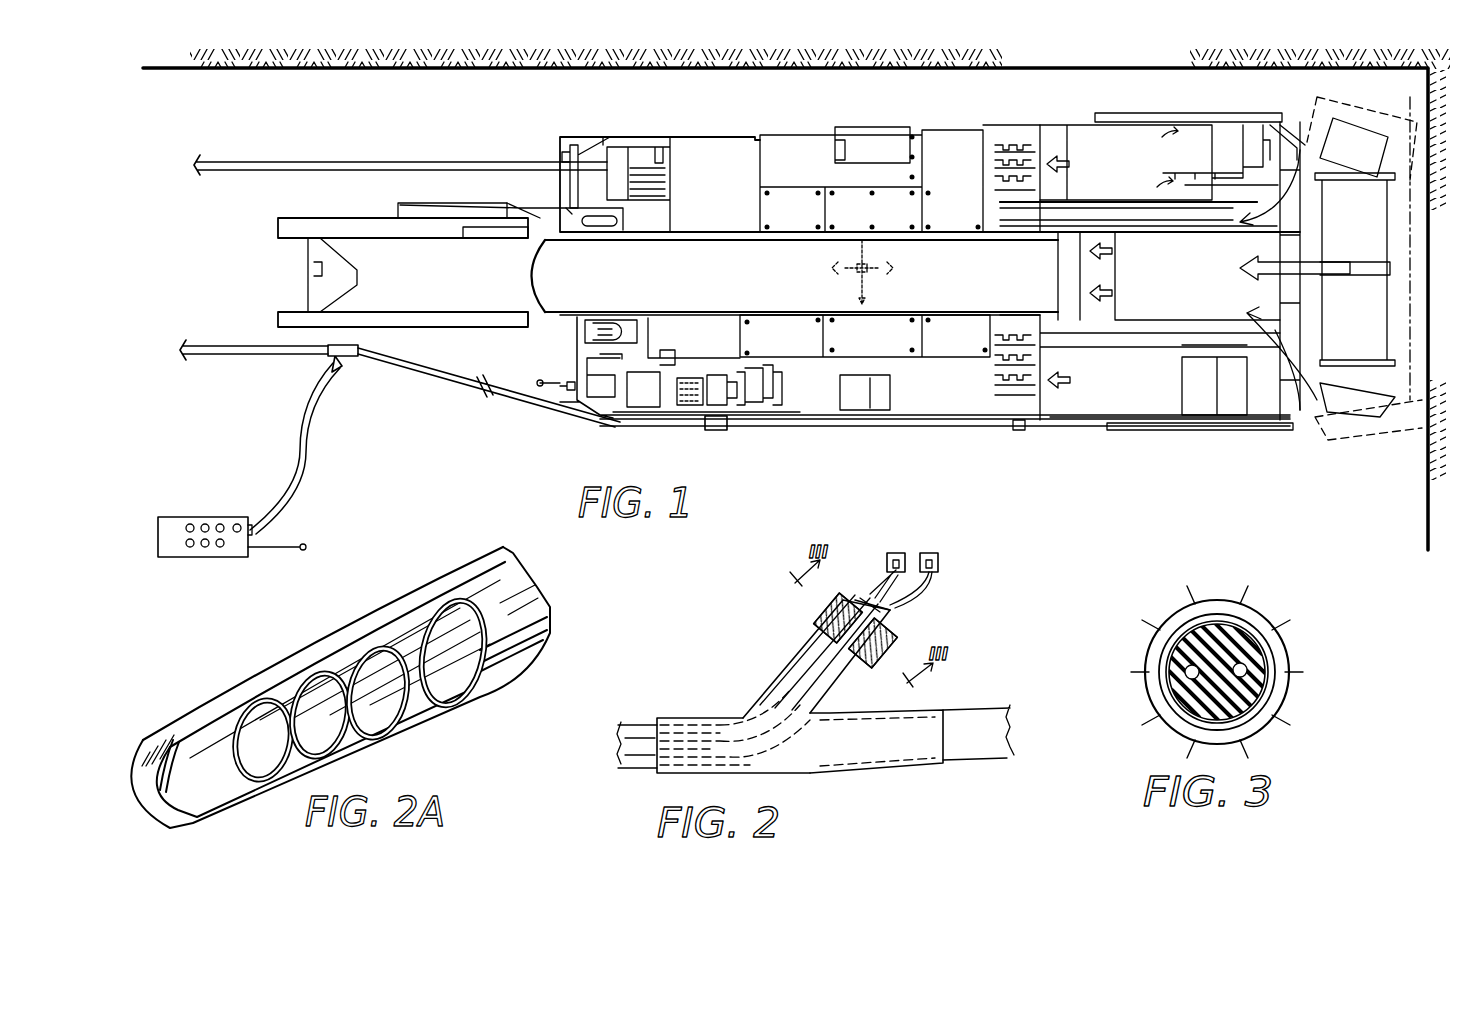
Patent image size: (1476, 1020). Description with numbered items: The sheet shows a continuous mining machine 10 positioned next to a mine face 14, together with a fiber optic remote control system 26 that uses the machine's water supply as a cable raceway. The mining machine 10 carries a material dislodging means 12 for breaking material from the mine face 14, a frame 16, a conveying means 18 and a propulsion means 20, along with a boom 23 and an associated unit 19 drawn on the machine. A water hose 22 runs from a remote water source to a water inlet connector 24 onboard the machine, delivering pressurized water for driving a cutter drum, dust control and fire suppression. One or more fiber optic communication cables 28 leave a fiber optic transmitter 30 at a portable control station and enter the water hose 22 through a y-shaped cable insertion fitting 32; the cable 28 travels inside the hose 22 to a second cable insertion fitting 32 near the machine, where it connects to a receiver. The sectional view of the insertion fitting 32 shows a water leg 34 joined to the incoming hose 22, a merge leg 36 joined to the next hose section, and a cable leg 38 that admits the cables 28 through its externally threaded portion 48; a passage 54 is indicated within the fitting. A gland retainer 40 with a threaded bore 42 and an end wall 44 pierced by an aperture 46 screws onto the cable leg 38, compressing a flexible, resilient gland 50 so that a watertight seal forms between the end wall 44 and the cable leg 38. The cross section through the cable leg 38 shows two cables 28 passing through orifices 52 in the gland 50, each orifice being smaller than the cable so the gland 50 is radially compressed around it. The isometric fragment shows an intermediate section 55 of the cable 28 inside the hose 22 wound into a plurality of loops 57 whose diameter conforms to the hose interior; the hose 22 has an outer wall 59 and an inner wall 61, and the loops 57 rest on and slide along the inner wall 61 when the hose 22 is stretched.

In FIG. 1, the mining machine 10 is at (587, 460).
In FIG. 1, the material dislodging means 12 is at (1364, 234).
In FIG. 1, the mine face 14 is at (1475, 236).
In FIG. 1, the frame 16 is at (783, 132).
In FIG. 1, the conveying means 18 is at (696, 283).
In FIG. 1, the hydraulic unit 19 is at (640, 157).
In FIG. 1, the propulsion means 20 is at (1012, 150).
In FIG. 1, the water hose 22 is at (248, 357).
In FIG. 2A, the water hose 22 is at (367, 622).
In FIG. 2, the water hose 22 is at (640, 725).
In FIG. 1, the boom 23 is at (418, 158).
In FIG. 1, the water inlet connector 24 is at (1027, 424).
In FIG. 1, the fiber optic remote control system 26 is at (267, 437).
In FIG. 1, the fiber optic communication cable 28 is at (300, 460).
In FIG. 2A, the fiber optic communication cable 28 is at (175, 778).
In FIG. 2, the fiber optic communication cable 28 is at (940, 575).
In FIG. 3, the fiber optic communication cable 28 is at (1188, 666).
In FIG. 1, the fiber optic transmitter 30 is at (185, 516).
In FIG. 1, the cable insertion fitting 32 is at (359, 367).
In FIG. 2, the cable insertion fitting 32 is at (702, 637).
In FIG. 3, the cable insertion fitting 32 is at (1180, 586).
In FIG. 2, the water leg 34 is at (723, 717).
In FIG. 2, the merge leg 36 is at (833, 772).
In FIG. 2, the cable leg 38 is at (777, 687).
In FIG. 3, the cable leg 38 is at (1265, 690).
In FIG. 2, the gland retainer 40 is at (843, 573).
In FIG. 3, the gland retainer 40 is at (1285, 725).
In FIG. 2, the threaded bore 42 is at (820, 626).
In FIG. 2, the end wall 44 is at (887, 633).
In FIG. 3, the end wall 44 is at (1290, 664).
In FIG. 2, the aperture 46 is at (890, 612).
In FIG. 2, the externally threaded portion 48 is at (863, 652).
In FIG. 2, the gland 50 is at (853, 610).
In FIG. 3, the gland 50 is at (1225, 640).
In FIG. 3, the orifices 52 is at (1183, 693).
In FIG. 2, the passage 54 is at (687, 720).
In FIG. 2A, the cable section 55 is at (353, 764).
In FIG. 2A, the loops 57 is at (403, 687).
In FIG. 2A, the outer wall 59 is at (218, 687).
In FIG. 2A, the inner wall 61 is at (217, 788).